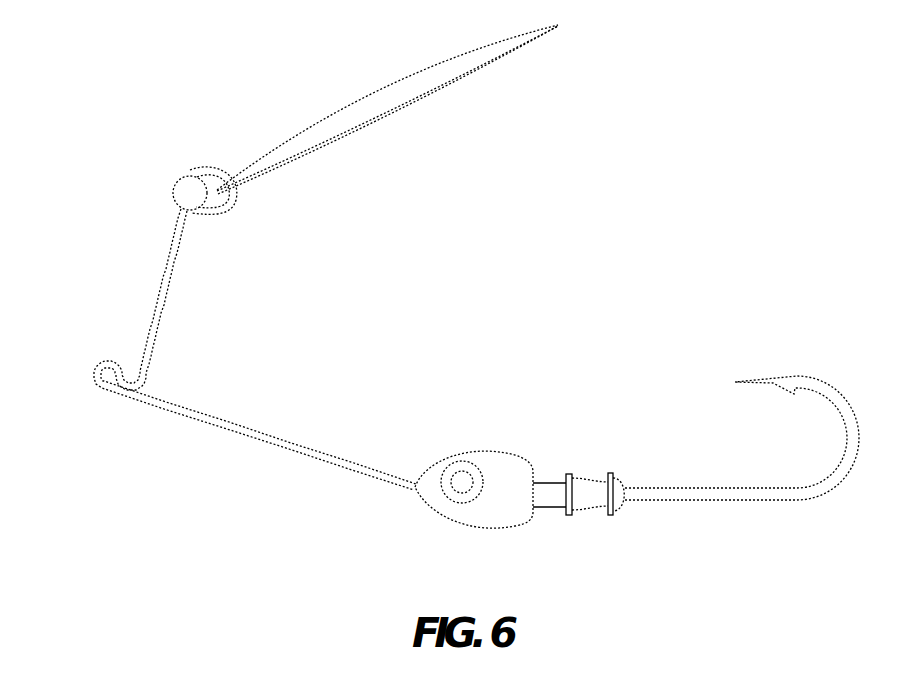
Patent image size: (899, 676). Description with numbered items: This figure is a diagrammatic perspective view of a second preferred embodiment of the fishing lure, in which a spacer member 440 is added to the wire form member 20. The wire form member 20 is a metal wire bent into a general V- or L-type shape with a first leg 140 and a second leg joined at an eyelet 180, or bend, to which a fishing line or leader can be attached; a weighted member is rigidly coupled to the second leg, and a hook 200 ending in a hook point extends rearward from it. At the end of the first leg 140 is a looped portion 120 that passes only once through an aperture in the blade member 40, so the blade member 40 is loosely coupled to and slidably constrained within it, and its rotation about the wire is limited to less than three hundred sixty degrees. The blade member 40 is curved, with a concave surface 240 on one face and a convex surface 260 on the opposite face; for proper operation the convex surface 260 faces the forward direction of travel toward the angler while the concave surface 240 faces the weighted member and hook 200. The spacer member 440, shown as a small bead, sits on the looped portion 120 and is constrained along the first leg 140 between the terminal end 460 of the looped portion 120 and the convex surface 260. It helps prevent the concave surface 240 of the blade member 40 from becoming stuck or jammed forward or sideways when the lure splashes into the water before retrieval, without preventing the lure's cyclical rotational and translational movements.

The wire form member 20 is at (249, 430).
The blade member 40 is at (432, 67).
The looped portion 120 is at (248, 179).
The first leg 140 is at (133, 183).
The eyelet 180 is at (100, 378).
The hook 200 is at (737, 382).
The concave surface 240 is at (380, 132).
The convex surface 260 is at (357, 99).
The spacer member 440 is at (185, 190).
The terminal end 460 is at (192, 214).